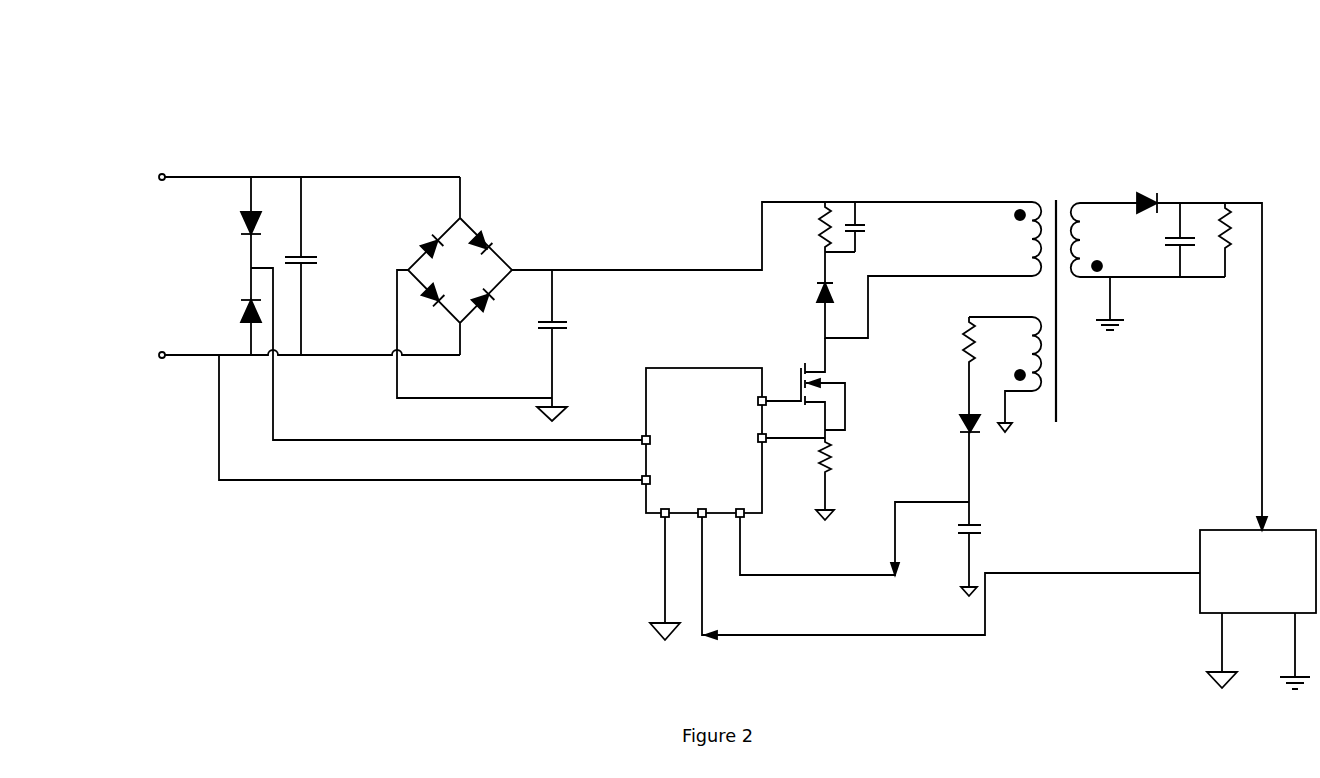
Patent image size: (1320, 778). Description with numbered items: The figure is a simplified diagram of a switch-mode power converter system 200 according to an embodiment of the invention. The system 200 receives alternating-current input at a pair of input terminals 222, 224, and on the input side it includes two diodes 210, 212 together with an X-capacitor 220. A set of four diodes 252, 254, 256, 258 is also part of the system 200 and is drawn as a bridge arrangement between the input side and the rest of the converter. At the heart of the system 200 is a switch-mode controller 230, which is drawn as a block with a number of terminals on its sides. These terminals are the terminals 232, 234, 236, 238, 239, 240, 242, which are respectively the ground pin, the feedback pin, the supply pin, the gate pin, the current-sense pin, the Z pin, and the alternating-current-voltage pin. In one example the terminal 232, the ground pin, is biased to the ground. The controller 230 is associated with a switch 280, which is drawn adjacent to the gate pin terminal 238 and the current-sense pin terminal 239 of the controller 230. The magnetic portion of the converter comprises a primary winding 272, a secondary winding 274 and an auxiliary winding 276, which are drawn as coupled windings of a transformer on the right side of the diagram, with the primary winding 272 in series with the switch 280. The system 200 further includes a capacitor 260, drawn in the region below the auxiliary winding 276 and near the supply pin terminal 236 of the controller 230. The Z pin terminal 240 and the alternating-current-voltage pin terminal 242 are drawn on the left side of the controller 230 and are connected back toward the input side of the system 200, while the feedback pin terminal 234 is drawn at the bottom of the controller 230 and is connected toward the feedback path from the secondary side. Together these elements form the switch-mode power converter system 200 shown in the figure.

The switch-mode power converter system 200 is at (212, 97).
The diode 210 is at (251, 212).
The diode 212 is at (250, 300).
The X-capacitor 220 is at (316, 265).
The input terminal 222 is at (162, 174).
The input terminal 224 is at (162, 358).
The switch-mode controller 230 is at (740, 367).
The terminal 232 is at (664, 519).
The terminal 234 is at (704, 519).
The terminal 236 is at (742, 519).
The terminal 238 is at (766, 396).
The terminal 239 is at (767, 443).
The terminal 240 is at (642, 438).
The terminal 242 is at (642, 486).
The diode 252 is at (442, 233).
The diode 254 is at (487, 235).
The diode 256 is at (440, 303).
The diode 258 is at (482, 305).
The capacitor 260 is at (978, 533).
The primary winding 272 is at (1032, 202).
The secondary winding 274 is at (1079, 203).
The auxiliary winding 276 is at (1032, 392).
The switch 280 is at (825, 372).